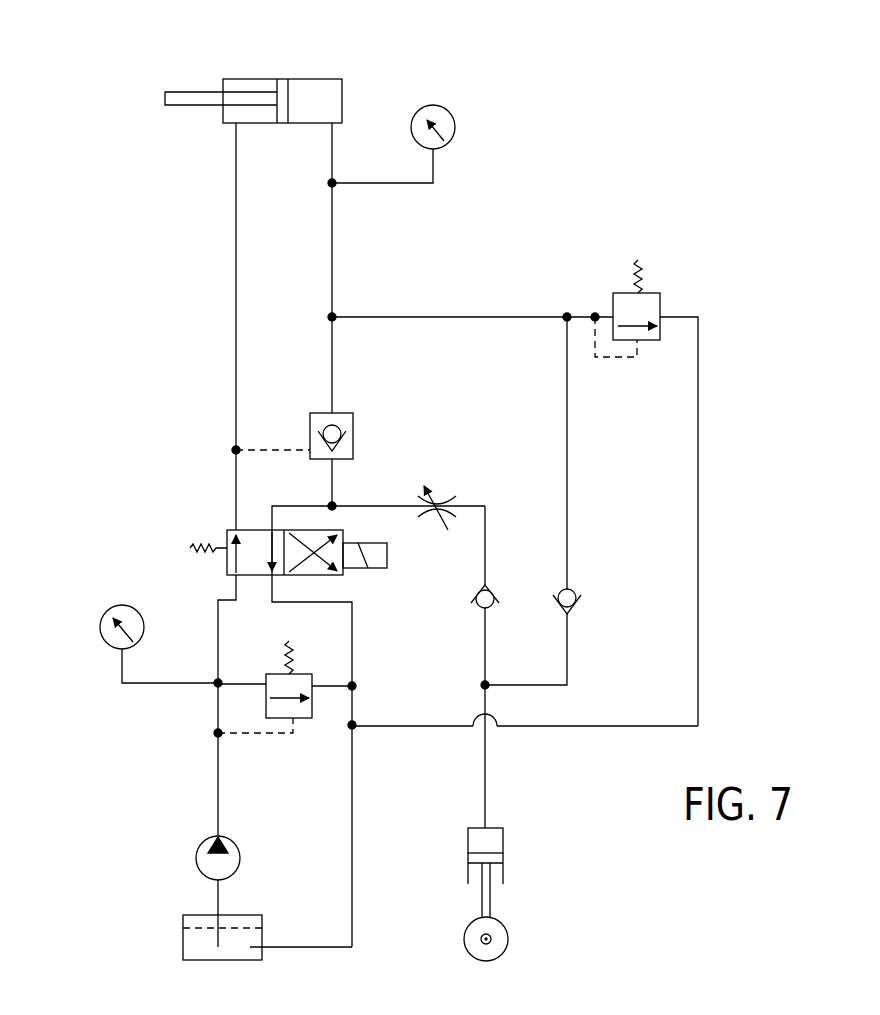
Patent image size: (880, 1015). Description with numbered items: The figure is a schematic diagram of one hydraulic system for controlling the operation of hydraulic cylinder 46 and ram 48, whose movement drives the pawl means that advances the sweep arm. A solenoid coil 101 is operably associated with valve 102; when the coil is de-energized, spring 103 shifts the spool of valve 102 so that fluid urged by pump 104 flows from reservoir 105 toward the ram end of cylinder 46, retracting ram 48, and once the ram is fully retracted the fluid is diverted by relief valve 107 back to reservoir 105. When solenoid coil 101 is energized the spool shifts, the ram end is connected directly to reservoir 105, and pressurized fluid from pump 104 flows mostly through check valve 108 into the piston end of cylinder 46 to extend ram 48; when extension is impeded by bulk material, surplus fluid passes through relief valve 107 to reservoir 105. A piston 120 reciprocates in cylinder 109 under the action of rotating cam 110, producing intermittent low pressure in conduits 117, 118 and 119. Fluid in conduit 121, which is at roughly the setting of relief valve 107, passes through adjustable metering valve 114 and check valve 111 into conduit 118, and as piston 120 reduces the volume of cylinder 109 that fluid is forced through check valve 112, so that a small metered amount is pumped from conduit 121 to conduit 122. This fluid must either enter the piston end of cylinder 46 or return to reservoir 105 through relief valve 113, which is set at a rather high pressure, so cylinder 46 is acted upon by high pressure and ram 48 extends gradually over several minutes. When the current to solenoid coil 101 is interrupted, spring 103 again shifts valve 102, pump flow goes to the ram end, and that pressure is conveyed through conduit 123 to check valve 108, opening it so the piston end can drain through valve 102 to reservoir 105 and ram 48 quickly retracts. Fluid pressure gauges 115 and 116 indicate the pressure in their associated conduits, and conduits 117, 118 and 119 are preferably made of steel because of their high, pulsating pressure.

The hydraulic cylinder 46 is at (302, 79).
The ram 48 is at (203, 92).
The solenoid coil 101 is at (365, 570).
The valve 102 is at (258, 530).
The spring 103 is at (200, 544).
The pump 104 is at (232, 843).
The reservoir 105 is at (229, 952).
The relief valve 107 is at (300, 660).
The check valve 108 is at (353, 415).
The cylinder 109 is at (505, 836).
The rotating cam 110 is at (506, 930).
The check valve 111 is at (495, 590).
The check valve 112 is at (580, 590).
The relief valve 113 is at (660, 297).
The adjustable metering valve 114 is at (440, 500).
The fluid pressure gauge 115 is at (465, 108).
The fluid pressure gauge 116 is at (141, 618).
The conduit 117 is at (487, 772).
The conduit 118 is at (484, 655).
The conduit 119 is at (568, 665).
The piston 120 is at (505, 864).
The conduit 121 is at (362, 506).
The conduit 122 is at (568, 490).
The conduit 123 is at (252, 448).